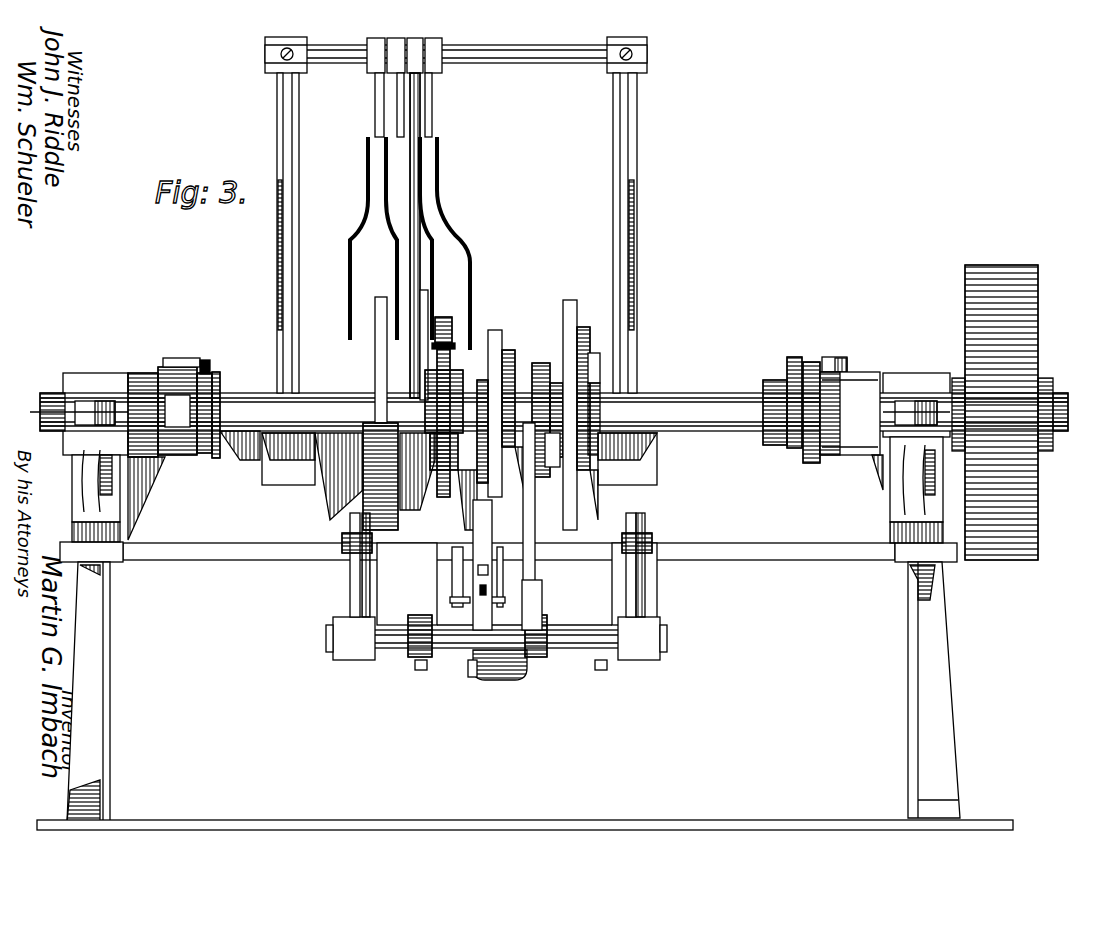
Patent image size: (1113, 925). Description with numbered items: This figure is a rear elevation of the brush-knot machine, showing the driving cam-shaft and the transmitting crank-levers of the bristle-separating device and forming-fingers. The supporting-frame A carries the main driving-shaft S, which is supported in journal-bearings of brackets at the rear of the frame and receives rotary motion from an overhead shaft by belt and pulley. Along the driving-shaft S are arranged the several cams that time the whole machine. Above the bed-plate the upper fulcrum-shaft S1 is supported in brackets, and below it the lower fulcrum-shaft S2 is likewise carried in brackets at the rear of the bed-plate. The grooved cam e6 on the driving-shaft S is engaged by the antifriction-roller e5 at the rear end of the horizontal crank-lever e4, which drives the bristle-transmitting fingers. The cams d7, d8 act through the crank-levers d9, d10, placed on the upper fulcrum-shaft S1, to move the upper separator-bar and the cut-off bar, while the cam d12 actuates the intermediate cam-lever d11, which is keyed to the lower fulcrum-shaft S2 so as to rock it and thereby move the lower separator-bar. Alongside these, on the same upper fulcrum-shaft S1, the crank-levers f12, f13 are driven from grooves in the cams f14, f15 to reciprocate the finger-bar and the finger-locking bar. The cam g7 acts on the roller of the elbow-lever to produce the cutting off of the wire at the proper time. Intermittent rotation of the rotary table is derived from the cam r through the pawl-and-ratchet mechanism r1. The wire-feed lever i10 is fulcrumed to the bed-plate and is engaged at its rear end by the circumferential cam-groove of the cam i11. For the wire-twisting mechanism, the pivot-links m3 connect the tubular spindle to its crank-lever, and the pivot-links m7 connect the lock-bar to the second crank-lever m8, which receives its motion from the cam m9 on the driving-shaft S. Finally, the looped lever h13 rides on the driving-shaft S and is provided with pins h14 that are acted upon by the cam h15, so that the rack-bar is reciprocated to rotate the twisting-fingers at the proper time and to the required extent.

The supporting-frame A is at (525, 601).
The main driving-shaft S is at (695, 392).
The upper fulcrum-shaft S1 is at (522, 60).
The lower fulcrum-shaft S2 is at (392, 650).
The crank-lever e4 is at (196, 354).
The antifriction-roller e5 is at (212, 370).
The grooved cam e6 is at (188, 447).
The cam d7 is at (402, 390).
The cam d8 is at (365, 472).
The crank-lever d9 is at (410, 262).
The crank-lever d10 is at (368, 187).
The intermediate cam-lever d11 is at (450, 580).
The cam d12 is at (412, 628).
The crank-lever f12 is at (422, 186).
The crank-lever f13 is at (472, 290).
The cam f14 is at (430, 352).
The cam f15 is at (452, 360).
The cam g7 is at (441, 320).
The pivot-links m3 is at (505, 562).
The pivot-links m7 is at (472, 672).
The second crank-lever m8 is at (524, 505).
The cam m9 is at (514, 398).
The cam r is at (553, 468).
The pawl-and-ratchet mechanism r1 is at (547, 409).
The looped lever h13 is at (808, 458).
The pins h14 is at (780, 440).
The cam h15 is at (788, 375).
The lever i10 is at (837, 350).
The cam i11 is at (836, 405).